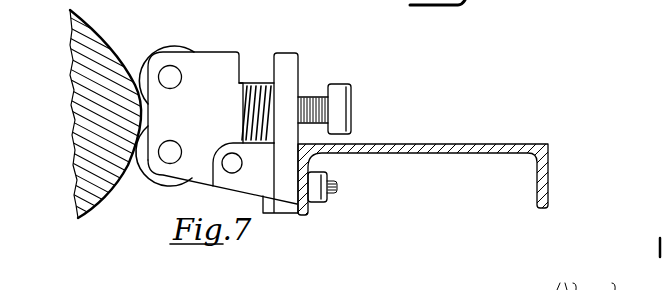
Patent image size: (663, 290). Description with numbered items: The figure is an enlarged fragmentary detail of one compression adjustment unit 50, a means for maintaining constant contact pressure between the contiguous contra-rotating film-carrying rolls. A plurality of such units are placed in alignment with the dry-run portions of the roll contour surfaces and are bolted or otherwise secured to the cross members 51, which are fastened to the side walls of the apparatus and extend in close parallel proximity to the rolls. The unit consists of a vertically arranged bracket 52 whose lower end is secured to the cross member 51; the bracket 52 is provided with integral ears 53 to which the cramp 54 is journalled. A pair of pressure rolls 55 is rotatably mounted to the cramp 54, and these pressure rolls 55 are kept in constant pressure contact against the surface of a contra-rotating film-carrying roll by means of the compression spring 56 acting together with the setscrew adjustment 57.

The compression adjustment unit 50 is at (227, 48).
The cross member 51 is at (545, 163).
The bracket 52 is at (285, 60).
The ears 53 is at (282, 185).
The cramp 54 is at (215, 80).
The pressure rolls 55 is at (157, 50).
The compression spring 56 is at (274, 84).
The setscrew adjustment 57 is at (317, 110).